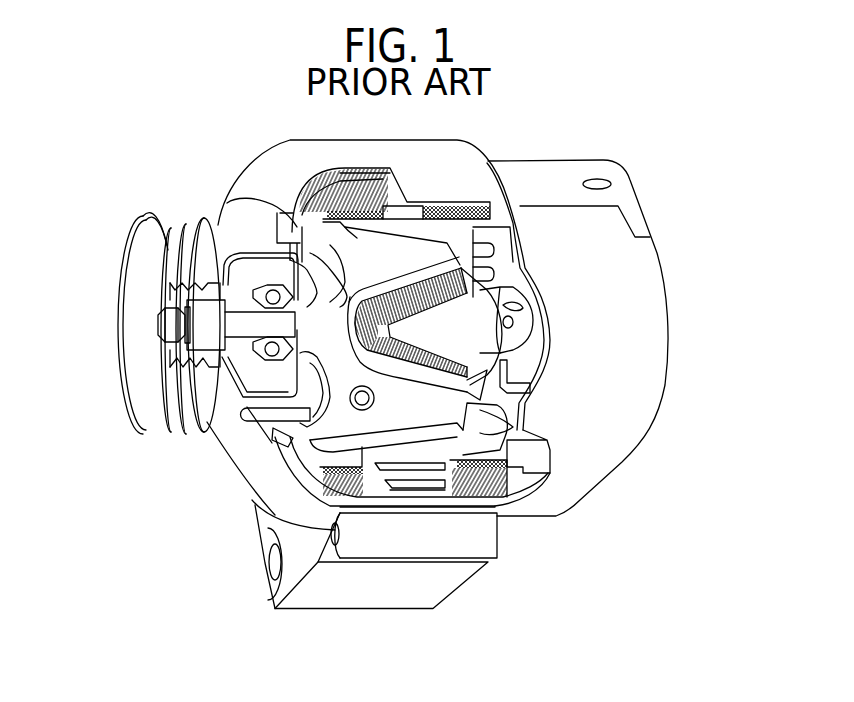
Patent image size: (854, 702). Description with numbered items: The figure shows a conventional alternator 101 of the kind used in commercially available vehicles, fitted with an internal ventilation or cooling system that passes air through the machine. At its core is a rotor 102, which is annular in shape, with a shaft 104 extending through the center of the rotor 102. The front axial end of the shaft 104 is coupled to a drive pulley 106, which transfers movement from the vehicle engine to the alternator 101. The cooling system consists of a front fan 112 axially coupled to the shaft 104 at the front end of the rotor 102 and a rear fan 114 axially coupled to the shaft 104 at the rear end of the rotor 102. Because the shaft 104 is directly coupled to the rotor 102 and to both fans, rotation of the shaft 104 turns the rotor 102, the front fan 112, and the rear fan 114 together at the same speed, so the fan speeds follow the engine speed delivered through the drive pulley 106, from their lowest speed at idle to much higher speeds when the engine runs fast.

The alternator 101 is at (556, 126).
The rotor 102 is at (472, 320).
The shaft 104 is at (250, 327).
The drive pulley 106 is at (171, 227).
The front fan 112 is at (300, 425).
The rear fan 114 is at (520, 325).